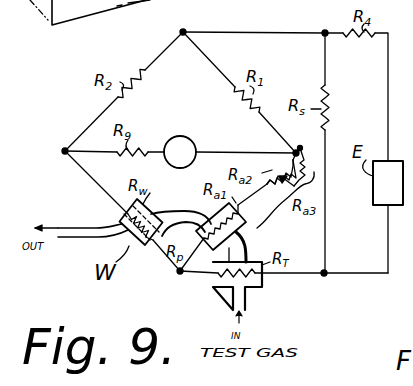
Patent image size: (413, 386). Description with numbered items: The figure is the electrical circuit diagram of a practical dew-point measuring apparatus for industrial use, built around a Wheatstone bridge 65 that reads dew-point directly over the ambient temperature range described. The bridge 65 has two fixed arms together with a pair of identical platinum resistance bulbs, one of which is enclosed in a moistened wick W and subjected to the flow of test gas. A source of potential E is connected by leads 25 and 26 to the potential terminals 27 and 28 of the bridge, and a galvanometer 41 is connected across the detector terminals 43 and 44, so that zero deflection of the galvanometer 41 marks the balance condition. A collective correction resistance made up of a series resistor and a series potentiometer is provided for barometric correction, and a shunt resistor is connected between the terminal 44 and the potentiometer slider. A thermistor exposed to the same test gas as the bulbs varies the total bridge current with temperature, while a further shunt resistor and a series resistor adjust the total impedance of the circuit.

The lead 25 is at (289, 24).
The lead 26 is at (300, 275).
The potential terminal 27 is at (183, 21).
The potential terminal 28 is at (178, 276).
The galvanometer 41 is at (186, 137).
The detector terminal 43 is at (62, 152).
The detector terminal 44 is at (304, 140).
The bridge 65 is at (197, 92).